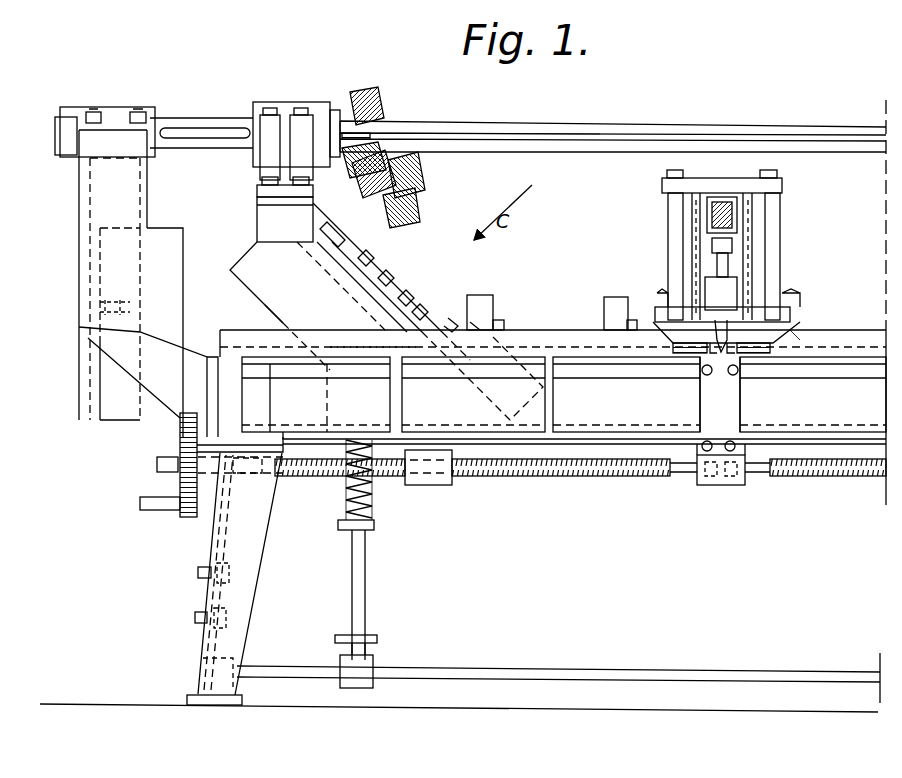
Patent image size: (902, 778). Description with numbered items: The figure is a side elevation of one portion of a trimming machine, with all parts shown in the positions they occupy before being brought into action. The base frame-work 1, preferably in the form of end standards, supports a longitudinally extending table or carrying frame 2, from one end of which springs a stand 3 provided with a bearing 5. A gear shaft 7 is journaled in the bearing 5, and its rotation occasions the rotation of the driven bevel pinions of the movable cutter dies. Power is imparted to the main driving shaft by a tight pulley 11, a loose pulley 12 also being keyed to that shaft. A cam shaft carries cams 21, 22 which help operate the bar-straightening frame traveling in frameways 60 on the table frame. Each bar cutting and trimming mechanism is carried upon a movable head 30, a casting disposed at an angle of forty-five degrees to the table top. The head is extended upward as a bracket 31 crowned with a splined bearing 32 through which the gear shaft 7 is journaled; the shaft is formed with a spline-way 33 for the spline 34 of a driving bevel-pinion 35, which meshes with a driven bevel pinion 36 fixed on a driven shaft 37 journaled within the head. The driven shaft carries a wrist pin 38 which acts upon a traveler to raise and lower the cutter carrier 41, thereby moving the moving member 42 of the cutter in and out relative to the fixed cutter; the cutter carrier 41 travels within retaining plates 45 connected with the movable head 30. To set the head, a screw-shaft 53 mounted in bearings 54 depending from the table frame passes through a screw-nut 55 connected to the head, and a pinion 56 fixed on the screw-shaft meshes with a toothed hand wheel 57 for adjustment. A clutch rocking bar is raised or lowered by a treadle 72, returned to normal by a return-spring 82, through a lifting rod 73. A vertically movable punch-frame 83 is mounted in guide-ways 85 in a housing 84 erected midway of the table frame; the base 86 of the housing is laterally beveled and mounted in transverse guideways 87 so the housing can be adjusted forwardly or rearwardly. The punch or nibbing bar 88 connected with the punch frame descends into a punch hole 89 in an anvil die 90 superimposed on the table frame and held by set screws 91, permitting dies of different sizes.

The base frame-work 1 is at (227, 579).
The table or carrying frame 2 is at (553, 392).
The stand 3 is at (113, 275).
The bearing 5 is at (108, 125).
The gear shaft 7 is at (520, 130).
The tight pulley 11 is at (100, 402).
The loose pulley 12 is at (165, 408).
The cam 21 is at (494, 312).
The cam 22 is at (615, 305).
The movable head 30 is at (386, 311).
The bracket 31 is at (285, 219).
The splined bearing 32 is at (286, 150).
The spline-way 33 is at (440, 133).
The spline 34 is at (390, 135).
The driving bevel-pinion 35 is at (380, 112).
The driven bevel pinion 36 is at (418, 213).
The driven shaft 37 is at (400, 185).
The wrist pin 38 is at (345, 228).
The cutter carrier 41 is at (456, 326).
The moving member of the cutter 42 is at (478, 322).
The retaining plates 45 is at (395, 255).
The screw-shaft 53 is at (580, 480).
The bearings 54 is at (205, 477).
The screw-nut 55 is at (428, 477).
The pinion 56 is at (185, 462).
The toothed hand wheel 57 is at (185, 520).
The frameways 60 is at (372, 347).
The treadle 72 is at (375, 642).
The lifting rod 73 is at (366, 577).
The return-spring 82 is at (345, 495).
The punch-frame 83 is at (708, 248).
The housing 84 is at (668, 270).
The guide-ways 85 is at (745, 250).
The base of the housing 86 is at (773, 325).
The transverse guideways 87 is at (795, 331).
The punch or nibbing bar 88 is at (728, 265).
The punch hole 89 is at (717, 354).
The anvil die 90 is at (730, 354).
The set screws 91 is at (690, 354).